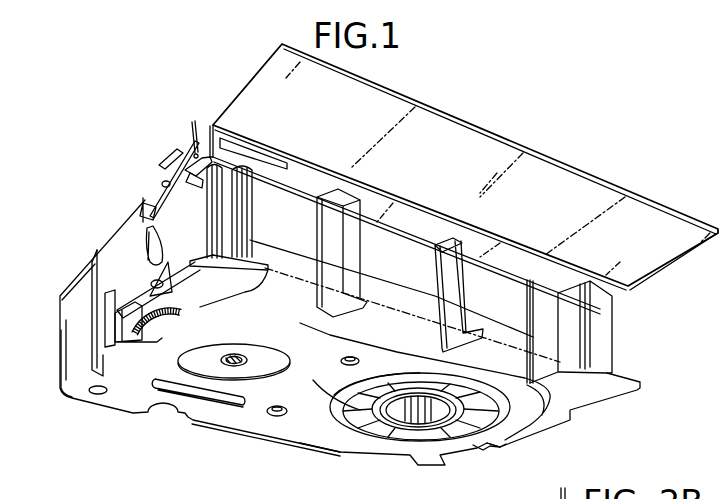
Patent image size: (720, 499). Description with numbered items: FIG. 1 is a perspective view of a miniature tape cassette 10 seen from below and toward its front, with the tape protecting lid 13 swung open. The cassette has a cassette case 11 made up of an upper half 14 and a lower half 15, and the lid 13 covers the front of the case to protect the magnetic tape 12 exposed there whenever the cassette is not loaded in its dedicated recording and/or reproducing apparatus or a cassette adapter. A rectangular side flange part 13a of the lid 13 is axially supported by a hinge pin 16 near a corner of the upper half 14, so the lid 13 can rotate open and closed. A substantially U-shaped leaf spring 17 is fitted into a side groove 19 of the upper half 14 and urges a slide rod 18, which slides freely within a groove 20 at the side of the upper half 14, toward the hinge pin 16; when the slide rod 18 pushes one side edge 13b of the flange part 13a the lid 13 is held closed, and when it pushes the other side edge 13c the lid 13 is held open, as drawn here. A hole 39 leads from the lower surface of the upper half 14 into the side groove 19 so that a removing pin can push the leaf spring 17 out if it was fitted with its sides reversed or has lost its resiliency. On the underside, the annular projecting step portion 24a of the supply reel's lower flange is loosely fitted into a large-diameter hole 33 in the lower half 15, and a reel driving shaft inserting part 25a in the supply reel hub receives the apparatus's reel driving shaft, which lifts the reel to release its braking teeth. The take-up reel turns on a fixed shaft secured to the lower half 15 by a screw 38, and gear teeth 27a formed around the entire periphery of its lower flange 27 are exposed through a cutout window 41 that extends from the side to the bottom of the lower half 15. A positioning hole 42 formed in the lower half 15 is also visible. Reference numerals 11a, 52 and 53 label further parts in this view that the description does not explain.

The tape cassette 10 is at (425, 78).
The cassette case 11 is at (108, 232).
The front edge of base plate 11a is at (298, 444).
The magnetic tape 12 is at (424, 238).
The lid 13 is at (543, 151).
The side flange part 13a is at (209, 132).
The side edge 13b is at (193, 185).
The side edge 13c is at (192, 165).
The upper half 14 is at (72, 289).
The lower half 15 is at (67, 362).
The hinge pin 16 is at (193, 121).
The leaf spring 17 is at (144, 229).
The slide rod 18 is at (163, 166).
The side groove 19 is at (147, 204).
The groove 20 is at (162, 179).
The annular projecting step portion 24a is at (350, 420).
The reel driving shaft inserting part 25a is at (506, 445).
The lower flange 27 is at (160, 327).
The gear teeth 27a is at (145, 335).
The hole 33 is at (333, 390).
The screw 38 is at (233, 355).
The hole 39 is at (151, 282).
The cutout window 41 is at (128, 343).
The positioning hole 42 is at (99, 395).
The hook 52 is at (484, 453).
The wall edge strip 53 is at (91, 267).